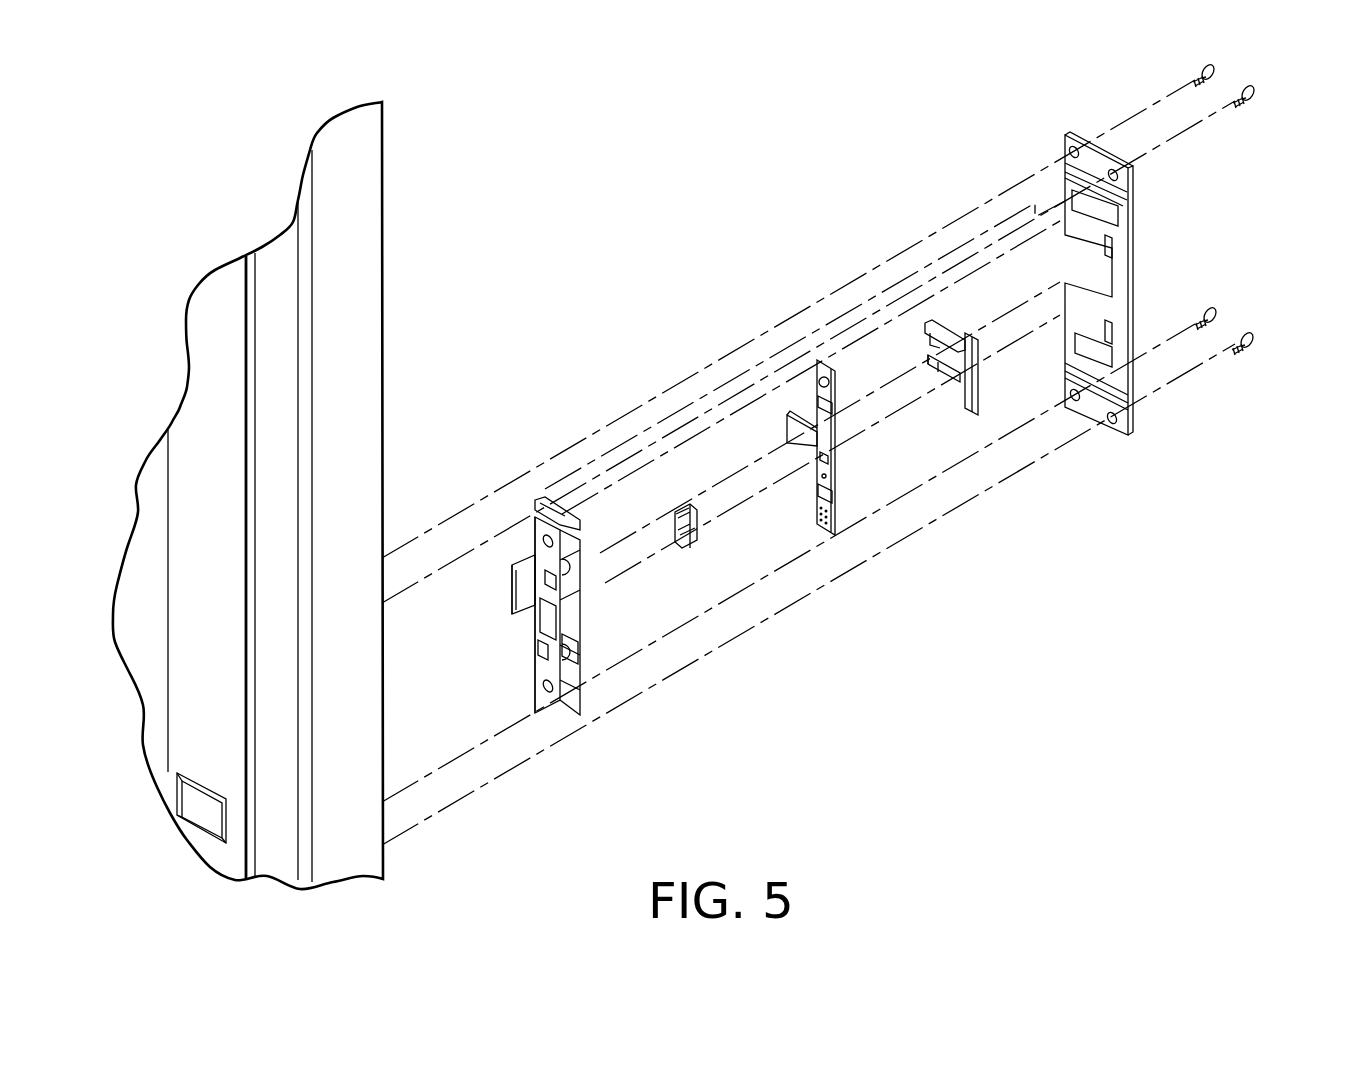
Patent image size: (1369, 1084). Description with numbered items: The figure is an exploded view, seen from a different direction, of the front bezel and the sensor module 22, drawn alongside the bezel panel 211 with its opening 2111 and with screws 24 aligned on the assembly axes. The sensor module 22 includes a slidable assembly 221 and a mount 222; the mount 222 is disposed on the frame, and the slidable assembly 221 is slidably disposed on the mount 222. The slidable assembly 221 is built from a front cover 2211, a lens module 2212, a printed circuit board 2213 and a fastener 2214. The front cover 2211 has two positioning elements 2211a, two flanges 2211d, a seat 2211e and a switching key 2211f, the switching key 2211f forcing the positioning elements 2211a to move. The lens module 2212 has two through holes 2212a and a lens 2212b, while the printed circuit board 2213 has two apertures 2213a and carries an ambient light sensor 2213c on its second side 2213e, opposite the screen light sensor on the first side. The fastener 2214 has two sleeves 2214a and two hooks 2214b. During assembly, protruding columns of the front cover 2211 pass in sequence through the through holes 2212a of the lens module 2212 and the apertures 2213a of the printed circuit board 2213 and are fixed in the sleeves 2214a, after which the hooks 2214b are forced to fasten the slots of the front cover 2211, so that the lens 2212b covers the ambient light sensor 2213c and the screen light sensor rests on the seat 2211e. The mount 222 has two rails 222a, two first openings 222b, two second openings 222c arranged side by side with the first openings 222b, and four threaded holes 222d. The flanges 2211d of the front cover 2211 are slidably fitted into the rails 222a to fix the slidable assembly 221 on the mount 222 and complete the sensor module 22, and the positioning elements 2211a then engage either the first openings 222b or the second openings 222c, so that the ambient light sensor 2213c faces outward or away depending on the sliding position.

The side panel 211 is at (200, 414).
The opening of side panel 2111 is at (205, 800).
The sensor module 22 is at (881, 393).
The slidable assembly 221 is at (746, 504).
The front cover 2211 is at (631, 567).
The positioning elements 2211a is at (578, 650).
The flanges 2211d is at (543, 503).
The seat 2211e is at (520, 597).
The switching key 2211f is at (540, 645).
The lens module 2212 is at (736, 510).
The through holes 2212a is at (685, 508).
The lens 2212b is at (698, 542).
The printed circuit board 2213 is at (822, 454).
The apertures 2213a is at (803, 415).
The ambient light sensor 2213c is at (830, 458).
The second side 2213e is at (822, 478).
The fastener 2214 is at (973, 444).
The sleeves 2214a is at (960, 348).
The hooks 2214b is at (962, 382).
The mount 222 is at (1099, 350).
The rails 222a is at (1133, 184).
The first openings 222b is at (1135, 338).
The second openings 222c is at (1118, 325).
The threaded holes 222d is at (1062, 150).
The screws 24 is at (1262, 98).